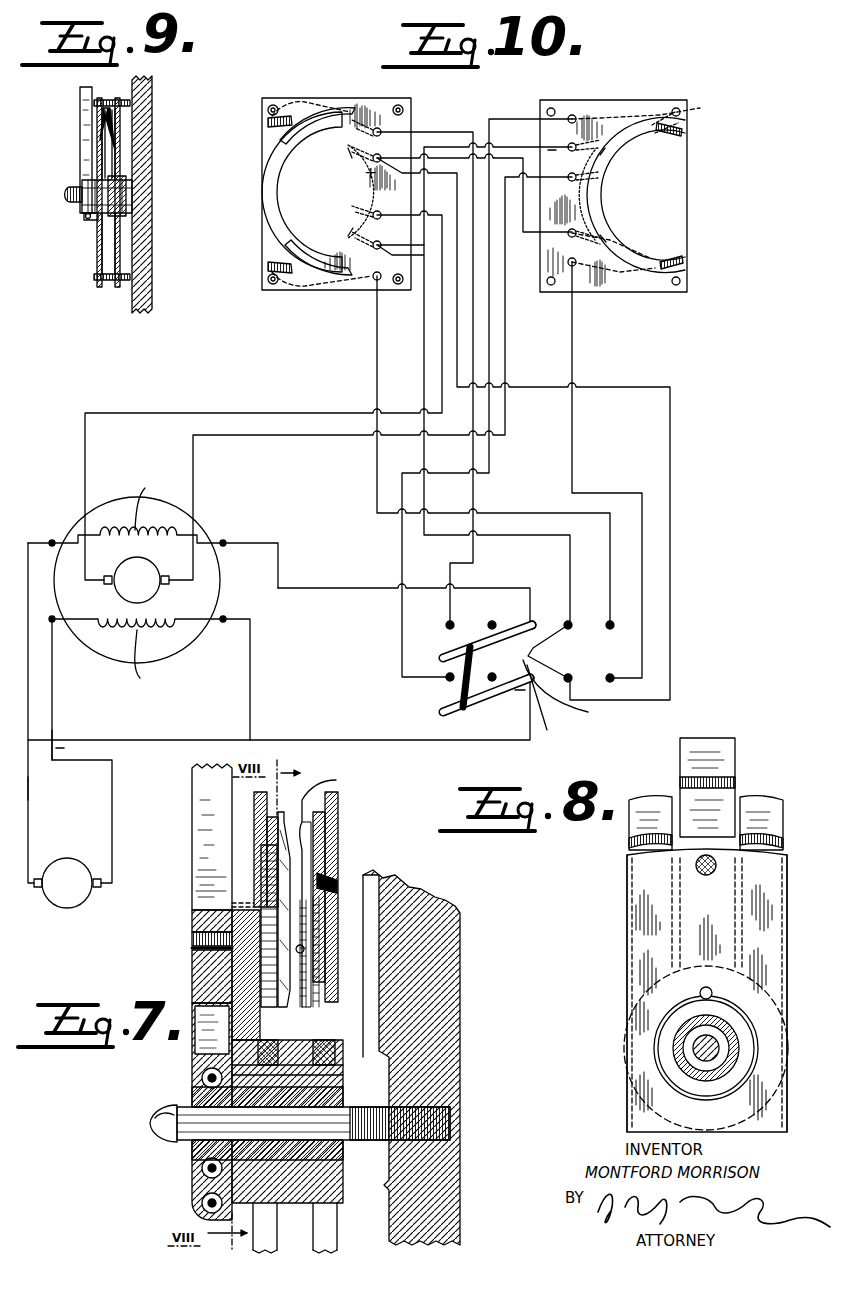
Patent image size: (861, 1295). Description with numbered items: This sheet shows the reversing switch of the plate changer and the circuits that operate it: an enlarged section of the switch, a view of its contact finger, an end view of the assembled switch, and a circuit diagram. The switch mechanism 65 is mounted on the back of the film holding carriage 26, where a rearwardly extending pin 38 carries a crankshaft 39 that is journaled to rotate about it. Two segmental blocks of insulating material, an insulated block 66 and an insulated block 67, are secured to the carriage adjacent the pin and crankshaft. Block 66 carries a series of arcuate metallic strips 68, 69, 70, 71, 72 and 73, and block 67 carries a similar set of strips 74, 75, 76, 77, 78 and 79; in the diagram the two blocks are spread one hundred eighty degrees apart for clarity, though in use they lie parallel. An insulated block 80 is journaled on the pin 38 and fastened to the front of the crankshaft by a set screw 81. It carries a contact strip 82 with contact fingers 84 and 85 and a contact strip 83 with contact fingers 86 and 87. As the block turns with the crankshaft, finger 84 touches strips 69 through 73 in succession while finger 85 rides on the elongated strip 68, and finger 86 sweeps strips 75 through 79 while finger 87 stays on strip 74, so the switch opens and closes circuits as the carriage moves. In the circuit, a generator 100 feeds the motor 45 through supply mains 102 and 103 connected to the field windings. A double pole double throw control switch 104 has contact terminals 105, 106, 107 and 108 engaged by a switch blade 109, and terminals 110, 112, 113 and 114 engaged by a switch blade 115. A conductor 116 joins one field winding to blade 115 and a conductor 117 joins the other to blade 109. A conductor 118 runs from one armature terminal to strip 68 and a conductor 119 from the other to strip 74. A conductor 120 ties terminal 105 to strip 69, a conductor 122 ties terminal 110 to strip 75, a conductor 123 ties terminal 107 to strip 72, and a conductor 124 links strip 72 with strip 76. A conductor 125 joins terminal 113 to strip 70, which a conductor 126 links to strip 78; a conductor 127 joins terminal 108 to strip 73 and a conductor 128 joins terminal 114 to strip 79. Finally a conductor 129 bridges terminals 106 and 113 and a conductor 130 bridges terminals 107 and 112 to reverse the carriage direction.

In FIG. 9, the carriage 26 is at (145, 148).
In FIG. 7, the carriage 26 is at (433, 1063).
In FIG. 9, the pin 38 is at (72, 196).
In FIG. 7, the pin 38 is at (205, 1117).
In FIG. 8, the pin 38 is at (692, 1048).
In FIG. 9, the crankshaft 39 is at (80, 131).
In FIG. 7, the crankshaft 39 is at (200, 872).
In FIG. 10, the motor 45 is at (160, 592).
In FIG. 9, the switch mechanism 65 is at (92, 289).
In FIG. 10, the switch mechanism 65 is at (532, 98).
In FIG. 9, the insulated block 66 is at (99, 288).
In FIG. 10, the insulated block 66 is at (334, 98).
In FIG. 7, the insulated block 66 is at (270, 800).
In FIG. 9, the insulated block 67 is at (118, 288).
In FIG. 10, the insulated block 67 is at (590, 100).
In FIG. 7, the insulated block 67 is at (340, 803).
In FIG. 10, the arcuate metallic strip 68 is at (340, 178).
In FIG. 7, the arcuate metallic strip 68 is at (265, 888).
In FIG. 10, the arcuate metallic strip 69 is at (268, 124).
In FIG. 7, the arcuate metallic strip 69 is at (270, 837).
In FIG. 10, the arcuate metallic strip 70 is at (326, 128).
In FIG. 10, the arcuate metallic strip 71 is at (344, 212).
In FIG. 10, the arcuate metallic strip 72 is at (325, 255).
In FIG. 10, the arcuate metallic strip 73 is at (268, 266).
In FIG. 10, the arcuate metallic strip 74 is at (596, 183).
In FIG. 7, the arcuate metallic strip 74 is at (370, 900).
In FIG. 10, the arcuate metallic strip 75 is at (690, 125).
In FIG. 7, the arcuate metallic strip 75 is at (325, 830).
In FIG. 10, the arcuate metallic strip 76 is at (634, 143).
In FIG. 10, the arcuate metallic strip 77 is at (615, 185).
In FIG. 10, the arcuate metallic strip 78 is at (618, 262).
In FIG. 10, the arcuate metallic strip 79 is at (687, 262).
In FIG. 9, the insulated block 80 is at (92, 220).
In FIG. 7, the insulated block 80 is at (240, 1038).
In FIG. 8, the insulated block 80 is at (775, 968).
In FIG. 7, the set screw 81 is at (195, 958).
In FIG. 8, the set screw 81 is at (710, 870).
In FIG. 9, the contact strip 82 is at (90, 186).
In FIG. 7, the contact strip 82 is at (235, 980).
In FIG. 8, the contact strip 82 is at (783, 878).
In FIG. 9, the contact strip 83 is at (126, 186).
In FIG. 7, the contact strip 83 is at (305, 947).
In FIG. 8, the contact strip 83 is at (783, 868).
In FIG. 7, the contact finger 84 is at (262, 812).
In FIG. 8, the contact finger 84 is at (712, 745).
In FIG. 7, the contact finger 85 is at (283, 875).
In FIG. 8, the contact finger 85 is at (658, 800).
In FIG. 7, the contact finger 86 is at (331, 888).
In FIG. 8, the contact finger 86 is at (700, 742).
In FIG. 7, the contact finger 87 is at (330, 872).
In FIG. 8, the contact finger 87 is at (638, 810).
In FIG. 10, the generator 100 is at (55, 908).
In FIG. 10, the supply main 102 is at (30, 779).
In FIG. 10, the supply main 103 is at (54, 742).
In FIG. 10, the control switch 104 is at (560, 645).
In FIG. 10, the contact terminal 105 is at (447, 623).
In FIG. 10, the contact terminal 106 is at (490, 622).
In FIG. 10, the contact terminal 107 is at (565, 622).
In FIG. 10, the contact terminal 108 is at (608, 622).
In FIG. 10, the switch blade 109 is at (465, 636).
In FIG. 10, the contact terminal 110 is at (450, 681).
In FIG. 10, the contact terminal 112 is at (490, 673).
In FIG. 10, the contact terminal 113 is at (571, 675).
In FIG. 10, the contact terminal 114 is at (628, 662).
In FIG. 10, the switch blade 115 is at (486, 696).
In FIG. 10, the conductor 116 is at (300, 740).
In FIG. 10, the conductor 117 is at (358, 586).
In FIG. 10, the conductor 118 is at (440, 300).
In FIG. 10, the conductor 119 is at (508, 276).
In FIG. 10, the conductor 120 is at (440, 141).
In FIG. 10, the conductor 122 is at (496, 115).
In FIG. 10, the conductor 123 is at (424, 326).
In FIG. 10, the conductor 124 is at (416, 247).
In FIG. 10, the conductor 125 is at (442, 175).
In FIG. 10, the conductor 126 is at (404, 162).
In FIG. 10, the conductor 127 is at (375, 316).
In FIG. 10, the conductor 128 is at (573, 318).
In FIG. 10, the conductor 129 is at (570, 691).
In FIG. 10, the conductor 130 is at (549, 703).